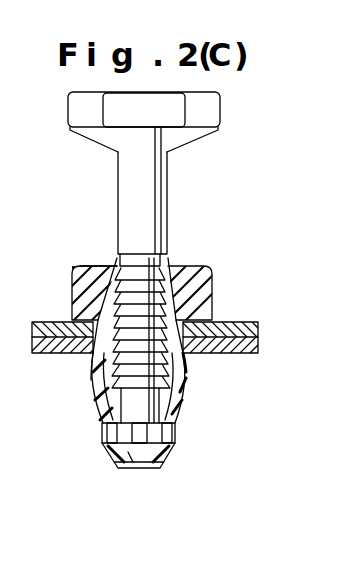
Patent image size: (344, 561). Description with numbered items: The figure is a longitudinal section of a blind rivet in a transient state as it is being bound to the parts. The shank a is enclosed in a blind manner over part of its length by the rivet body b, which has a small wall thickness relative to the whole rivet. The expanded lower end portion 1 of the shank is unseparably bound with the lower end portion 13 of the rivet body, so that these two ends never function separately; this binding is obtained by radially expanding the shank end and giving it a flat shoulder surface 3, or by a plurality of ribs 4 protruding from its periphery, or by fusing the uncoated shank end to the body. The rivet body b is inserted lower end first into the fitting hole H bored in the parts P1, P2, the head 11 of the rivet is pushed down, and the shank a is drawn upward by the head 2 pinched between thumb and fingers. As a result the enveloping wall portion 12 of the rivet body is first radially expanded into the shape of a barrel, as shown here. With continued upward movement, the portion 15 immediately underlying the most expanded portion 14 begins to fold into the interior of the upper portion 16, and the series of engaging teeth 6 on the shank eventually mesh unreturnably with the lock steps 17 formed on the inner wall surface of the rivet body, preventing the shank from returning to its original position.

The expanded lower end portion of the shank 1 is at (131, 470).
The head of the shank 2 is at (200, 116).
The flat shoulder surface 3 is at (122, 415).
The ribs 4 is at (100, 440).
The engaging teeth 6 is at (166, 265).
The head of the rivet 11 is at (147, 267).
The enveloping wall portion 12 is at (93, 358).
The lower end portion of the rivet body 13 is at (149, 460).
The most expanded portion 14 is at (187, 382).
The lower portion of the enveloping wall 15 is at (186, 406).
The upper portion of the enveloping wall 16 is at (186, 362).
The lock steps 17 is at (100, 262).
The shank a is at (116, 178).
The rivet body b is at (144, 353).
The fitting hole H is at (82, 325).
The part P1 is at (260, 322).
The part P2 is at (260, 350).